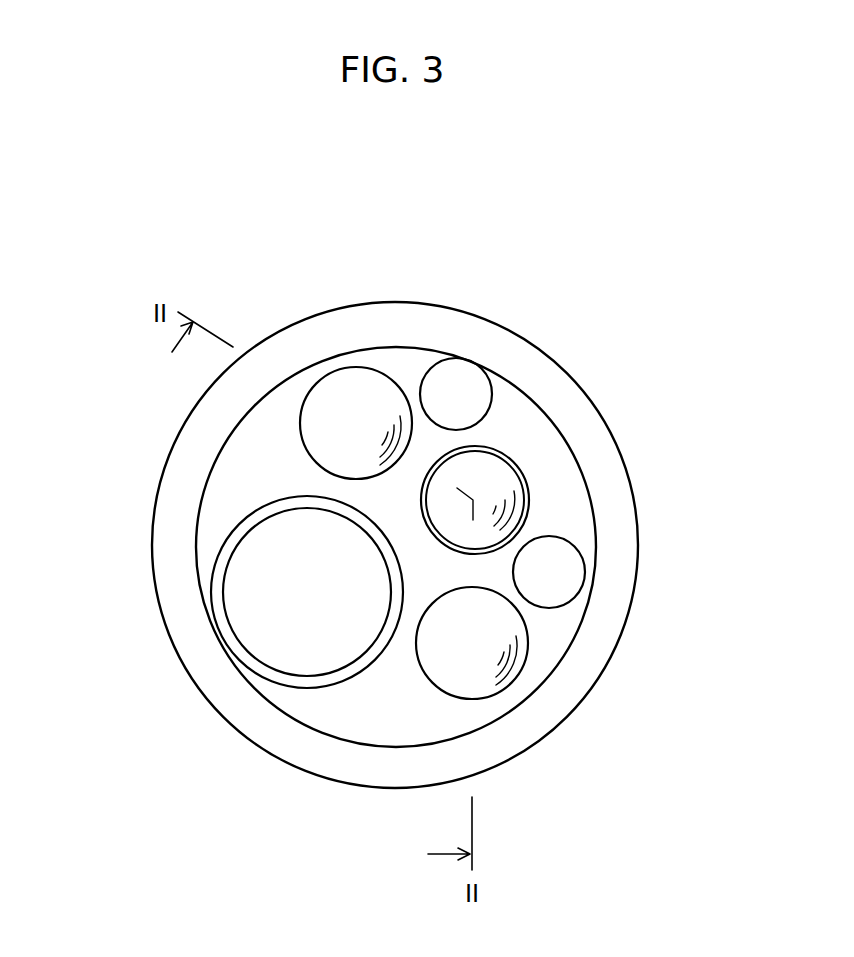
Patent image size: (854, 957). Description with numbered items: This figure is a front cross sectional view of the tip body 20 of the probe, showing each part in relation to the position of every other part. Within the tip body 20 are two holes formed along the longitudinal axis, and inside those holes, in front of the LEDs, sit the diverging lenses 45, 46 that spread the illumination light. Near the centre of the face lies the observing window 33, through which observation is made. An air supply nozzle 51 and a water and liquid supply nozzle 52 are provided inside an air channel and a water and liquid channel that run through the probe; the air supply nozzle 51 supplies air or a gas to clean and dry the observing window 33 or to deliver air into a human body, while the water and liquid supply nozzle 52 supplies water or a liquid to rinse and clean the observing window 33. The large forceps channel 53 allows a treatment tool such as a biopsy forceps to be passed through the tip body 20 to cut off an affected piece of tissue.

The tip body 20 is at (127, 521).
The observing window 33 is at (497, 473).
The diverging lens 45 is at (345, 392).
The diverging lens 46 is at (527, 665).
The air supply nozzle 51 is at (472, 385).
The water and liquid supply nozzle 52 is at (563, 573).
The forceps channel 53 is at (267, 612).